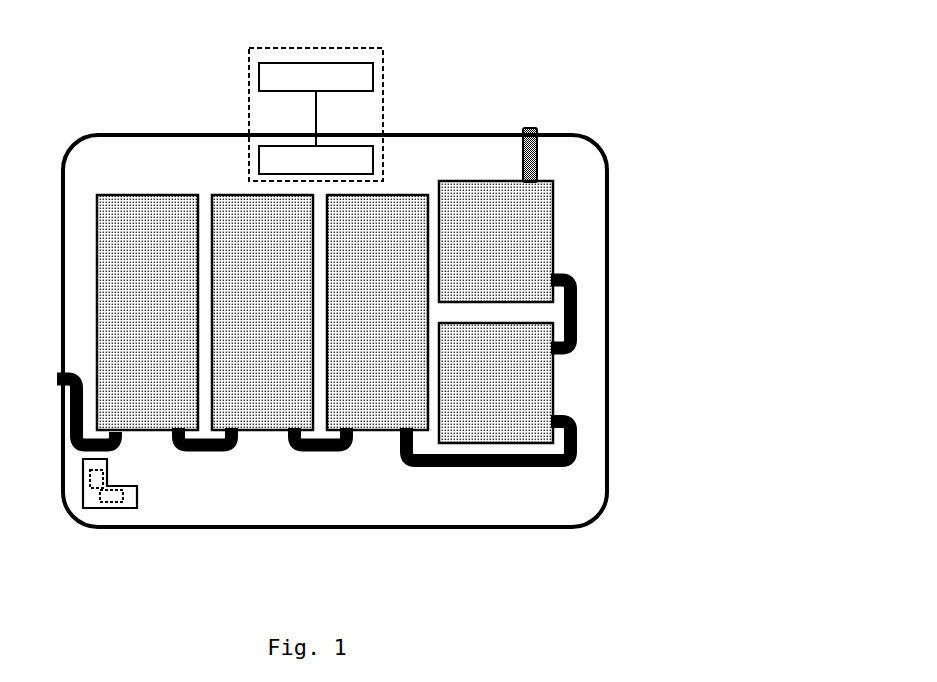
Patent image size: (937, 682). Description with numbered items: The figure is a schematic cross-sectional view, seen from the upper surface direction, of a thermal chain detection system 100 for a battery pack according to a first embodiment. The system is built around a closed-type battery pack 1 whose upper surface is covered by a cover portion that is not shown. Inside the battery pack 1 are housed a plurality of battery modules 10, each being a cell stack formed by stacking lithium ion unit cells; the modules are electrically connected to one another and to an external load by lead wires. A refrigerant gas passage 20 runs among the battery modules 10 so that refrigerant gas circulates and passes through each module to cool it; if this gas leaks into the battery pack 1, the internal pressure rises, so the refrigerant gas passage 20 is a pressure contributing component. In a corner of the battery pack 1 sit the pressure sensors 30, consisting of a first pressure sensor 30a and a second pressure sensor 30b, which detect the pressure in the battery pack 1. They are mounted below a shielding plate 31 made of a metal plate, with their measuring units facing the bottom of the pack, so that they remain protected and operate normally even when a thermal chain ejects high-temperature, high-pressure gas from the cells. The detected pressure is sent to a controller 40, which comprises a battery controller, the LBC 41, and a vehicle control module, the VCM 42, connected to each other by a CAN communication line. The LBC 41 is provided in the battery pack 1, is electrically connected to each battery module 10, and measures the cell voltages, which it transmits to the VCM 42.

The thermal chain detection system 100 is at (522, 78).
The battery pack 1 is at (449, 135).
The battery module 10 is at (492, 190).
The refrigerant gas passage 20 is at (70, 415).
The pressure sensor 30 is at (52, 577).
The first pressure sensor 30a is at (95, 490).
The second pressure sensor 30b is at (116, 503).
The shielding plate 31 is at (83, 496).
The controller 40 is at (262, 47).
The battery controller (LBC) 41 is at (259, 150).
The vehicle control module (VCM) 42 is at (259, 72).